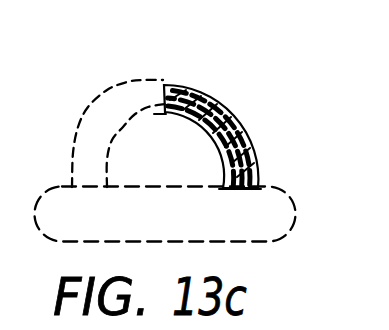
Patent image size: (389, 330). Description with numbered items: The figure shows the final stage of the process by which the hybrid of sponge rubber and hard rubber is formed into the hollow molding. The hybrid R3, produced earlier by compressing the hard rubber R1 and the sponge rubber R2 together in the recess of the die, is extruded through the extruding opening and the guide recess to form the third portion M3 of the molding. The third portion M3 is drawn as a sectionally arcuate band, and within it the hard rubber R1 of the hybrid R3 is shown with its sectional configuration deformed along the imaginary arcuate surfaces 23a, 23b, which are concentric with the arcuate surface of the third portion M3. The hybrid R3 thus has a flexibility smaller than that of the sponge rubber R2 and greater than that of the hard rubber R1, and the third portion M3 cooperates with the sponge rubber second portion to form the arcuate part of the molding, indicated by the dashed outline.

The imaginary arcuate surface 23a is at (231, 110).
The imaginary arcuate surface 23b is at (191, 118).
The hard rubber R1 is at (187, 87).
The sponge rubber R2 is at (239, 105).
The hybrid R3 is at (234, 118).
The third portion M3 is at (255, 157).